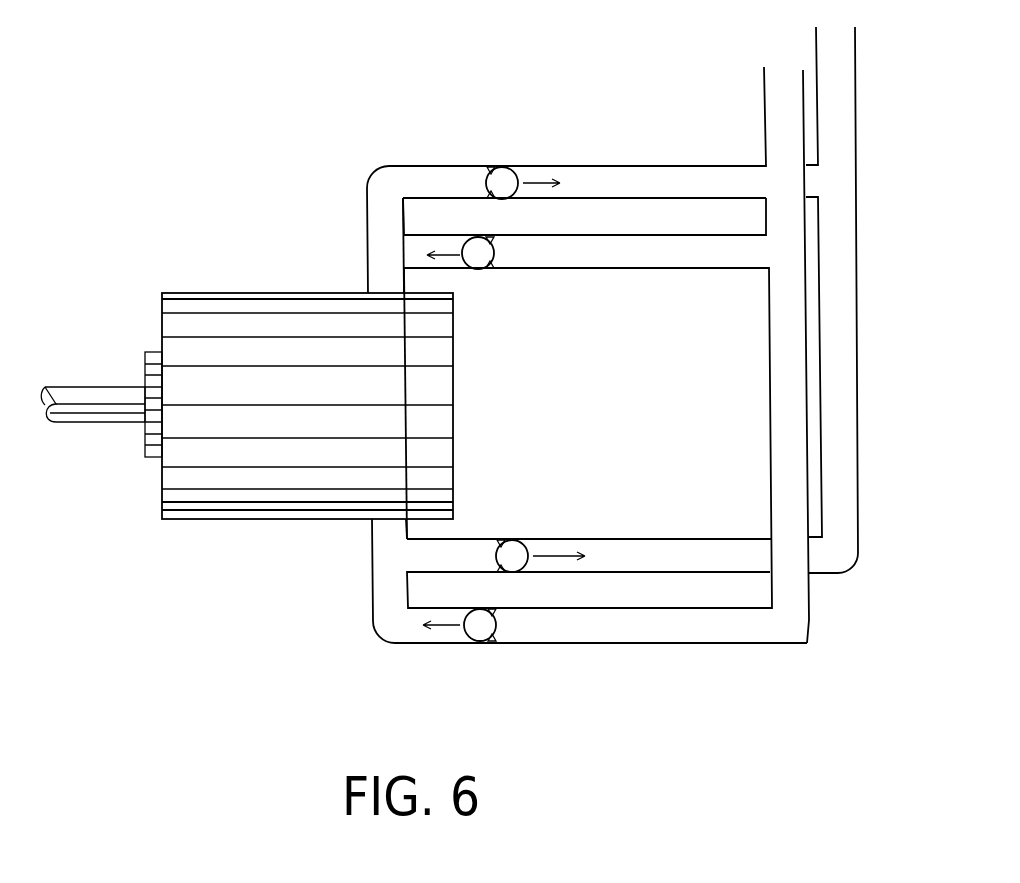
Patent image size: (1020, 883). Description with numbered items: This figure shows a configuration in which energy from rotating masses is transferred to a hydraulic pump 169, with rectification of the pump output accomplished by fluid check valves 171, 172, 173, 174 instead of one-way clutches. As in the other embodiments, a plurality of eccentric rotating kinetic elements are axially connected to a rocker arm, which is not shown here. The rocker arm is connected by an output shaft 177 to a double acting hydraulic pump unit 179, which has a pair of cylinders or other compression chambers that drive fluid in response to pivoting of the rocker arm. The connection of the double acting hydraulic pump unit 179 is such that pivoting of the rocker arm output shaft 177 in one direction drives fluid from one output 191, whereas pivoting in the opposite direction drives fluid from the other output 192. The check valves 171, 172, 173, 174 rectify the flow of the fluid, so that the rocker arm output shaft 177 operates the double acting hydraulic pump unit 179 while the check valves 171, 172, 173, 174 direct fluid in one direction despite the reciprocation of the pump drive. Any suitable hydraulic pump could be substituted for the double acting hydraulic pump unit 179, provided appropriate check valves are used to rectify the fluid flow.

The hydraulic pump 169 is at (340, 136).
The fluid check valve 171 is at (486, 158).
The fluid check valve 172 is at (497, 279).
The fluid check valve 173 is at (524, 524).
The fluid check valve 174 is at (490, 660).
The output shaft 177 is at (88, 387).
The double acting hydraulic pump unit 179 is at (226, 293).
The output 191 is at (373, 232).
The output 192 is at (378, 567).